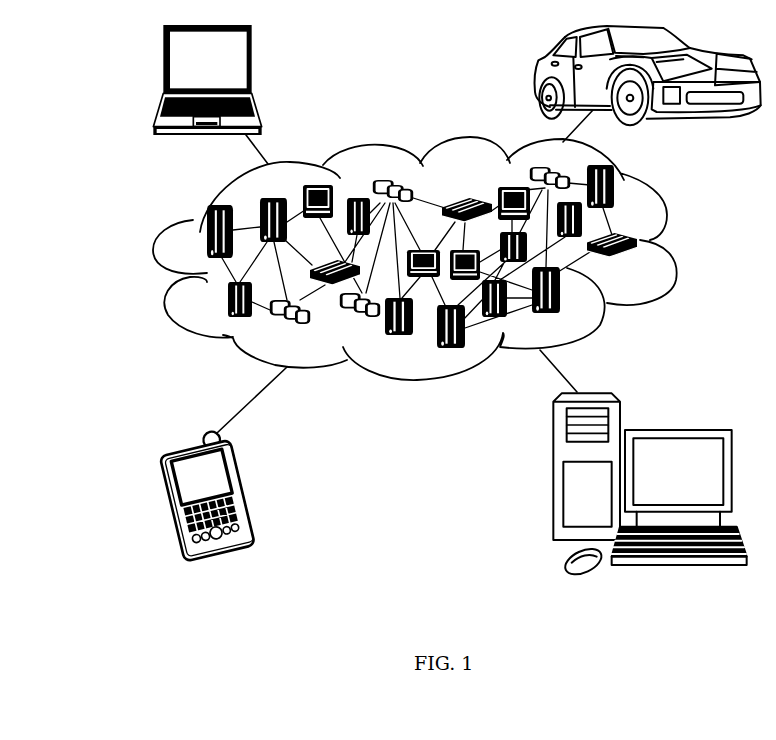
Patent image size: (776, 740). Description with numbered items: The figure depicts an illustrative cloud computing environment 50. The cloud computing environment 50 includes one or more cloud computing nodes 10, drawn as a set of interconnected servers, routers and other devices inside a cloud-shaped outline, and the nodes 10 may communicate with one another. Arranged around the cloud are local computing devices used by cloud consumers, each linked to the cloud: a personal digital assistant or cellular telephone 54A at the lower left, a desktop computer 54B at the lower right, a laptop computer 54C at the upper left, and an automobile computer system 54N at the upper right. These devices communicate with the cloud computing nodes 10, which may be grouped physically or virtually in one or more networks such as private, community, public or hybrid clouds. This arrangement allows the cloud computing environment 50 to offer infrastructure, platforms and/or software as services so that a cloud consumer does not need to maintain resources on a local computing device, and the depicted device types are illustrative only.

The cloud computing nodes 10 is at (643, 265).
The cloud computing environment 50 is at (677, 245).
The personal digital assistant or cellular telephone 54A is at (244, 491).
The desktop computer 54B is at (675, 429).
The laptop computer 54C is at (253, 70).
The automobile computer system 54N is at (536, 80).